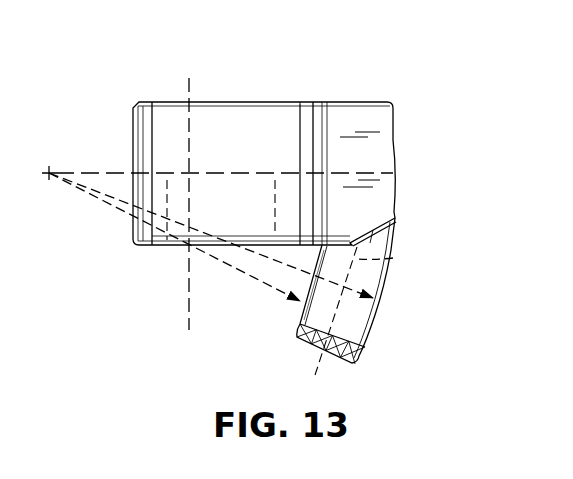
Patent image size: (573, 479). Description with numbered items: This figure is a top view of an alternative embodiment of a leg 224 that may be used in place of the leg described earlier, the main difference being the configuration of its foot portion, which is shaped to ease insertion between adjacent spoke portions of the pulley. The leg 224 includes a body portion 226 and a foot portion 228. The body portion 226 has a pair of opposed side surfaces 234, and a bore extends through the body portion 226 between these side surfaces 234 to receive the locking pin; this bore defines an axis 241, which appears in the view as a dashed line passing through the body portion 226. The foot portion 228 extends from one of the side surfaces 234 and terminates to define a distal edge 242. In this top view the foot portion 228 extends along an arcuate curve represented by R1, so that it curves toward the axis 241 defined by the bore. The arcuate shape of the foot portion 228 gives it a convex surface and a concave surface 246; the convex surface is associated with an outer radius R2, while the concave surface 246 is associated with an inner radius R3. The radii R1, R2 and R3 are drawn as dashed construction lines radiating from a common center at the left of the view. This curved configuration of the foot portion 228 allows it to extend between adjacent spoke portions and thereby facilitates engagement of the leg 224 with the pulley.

The leg 224 is at (387, 77).
The body portion 226 is at (340, 96).
The foot portion 228 is at (377, 341).
The side surfaces 234 is at (208, 102).
The axis 241 is at (188, 305).
The distal edge 242 is at (310, 350).
The concave surface 246 is at (298, 318).
The arcuate curve R1 is at (393, 258).
The outer radius R2 is at (337, 287).
The inner radius R3 is at (174, 241).